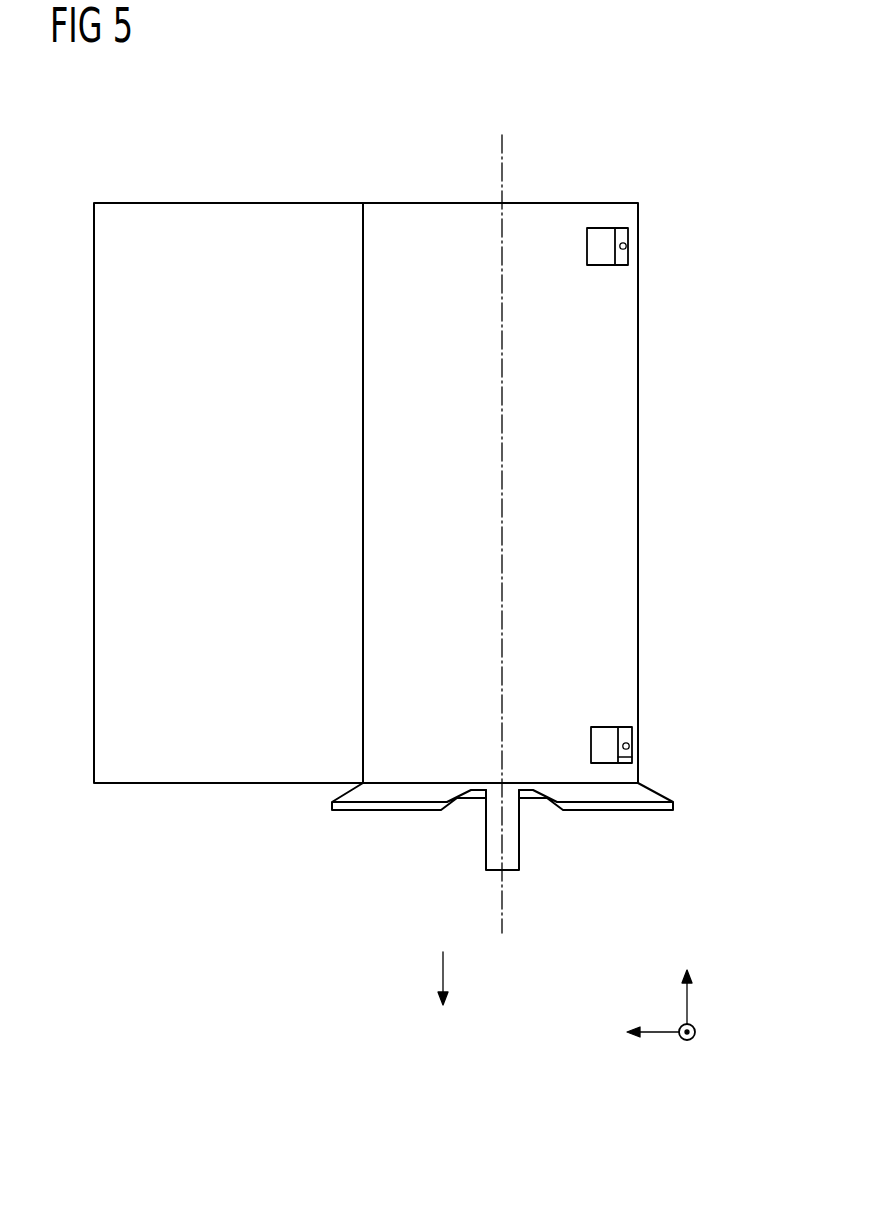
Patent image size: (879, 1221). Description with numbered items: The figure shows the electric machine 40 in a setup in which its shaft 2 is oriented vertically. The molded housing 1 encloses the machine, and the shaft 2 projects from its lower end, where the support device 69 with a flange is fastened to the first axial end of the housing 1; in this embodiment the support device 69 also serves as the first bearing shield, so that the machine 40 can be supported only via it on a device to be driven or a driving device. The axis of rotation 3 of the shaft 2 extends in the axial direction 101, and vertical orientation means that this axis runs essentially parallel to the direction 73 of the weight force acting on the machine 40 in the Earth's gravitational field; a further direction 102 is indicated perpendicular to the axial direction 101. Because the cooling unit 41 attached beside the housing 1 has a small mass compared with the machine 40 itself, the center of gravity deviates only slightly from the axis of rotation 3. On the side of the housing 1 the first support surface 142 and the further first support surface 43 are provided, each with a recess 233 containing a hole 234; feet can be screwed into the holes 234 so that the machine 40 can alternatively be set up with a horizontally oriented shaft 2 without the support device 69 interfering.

The molded housing 1 is at (625, 455).
The shaft 2 is at (486, 860).
The axis of rotation 3 is at (505, 920).
The electric machine 40 is at (471, 118).
The cooling unit 41 is at (197, 233).
The further first support surface 43 is at (639, 238).
The support device 69 is at (641, 795).
The direction of the weight force 73 is at (443, 973).
The axial direction 101 is at (688, 1000).
The second direction 102 is at (688, 1042).
The first support surface 142 is at (641, 740).
The recesses 233 is at (633, 759).
The holes 234 is at (624, 250).